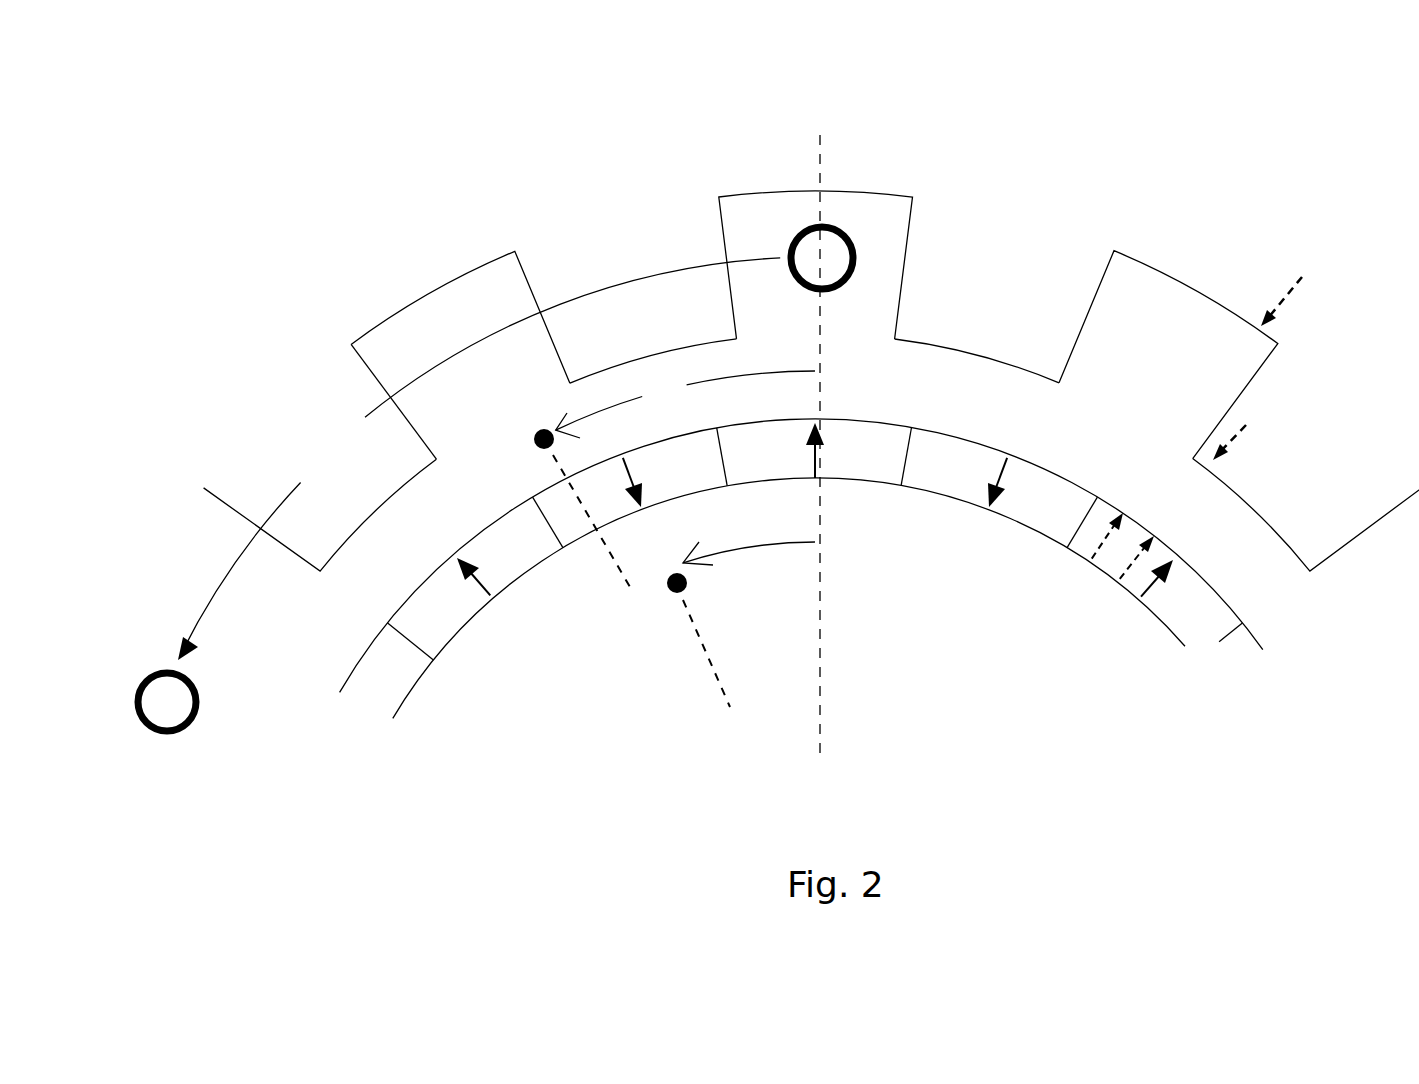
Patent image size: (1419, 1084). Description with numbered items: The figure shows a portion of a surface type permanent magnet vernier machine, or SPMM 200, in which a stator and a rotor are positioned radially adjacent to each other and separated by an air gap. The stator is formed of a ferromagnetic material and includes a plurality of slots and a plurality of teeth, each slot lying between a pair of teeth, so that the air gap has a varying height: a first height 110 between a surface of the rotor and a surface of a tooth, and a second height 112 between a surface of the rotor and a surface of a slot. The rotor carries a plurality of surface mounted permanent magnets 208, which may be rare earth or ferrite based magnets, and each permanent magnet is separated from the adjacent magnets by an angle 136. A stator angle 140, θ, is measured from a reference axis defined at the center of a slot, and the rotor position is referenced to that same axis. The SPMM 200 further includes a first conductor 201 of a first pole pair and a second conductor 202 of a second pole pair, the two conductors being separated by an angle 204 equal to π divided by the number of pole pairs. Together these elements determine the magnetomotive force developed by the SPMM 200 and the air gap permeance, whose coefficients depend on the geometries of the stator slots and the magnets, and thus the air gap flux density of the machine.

The first height 110 is at (1246, 425).
The second height 112 is at (1302, 277).
The angle 136 is at (740, 549).
The stator angle 140 is at (674, 479).
The surface type PMVM machine 200 is at (393, 243).
The first conductor 201 is at (843, 230).
The second conductor 202 is at (192, 730).
The angle 204 is at (264, 547).
The surface mounted permanent magnets 208 is at (518, 577).